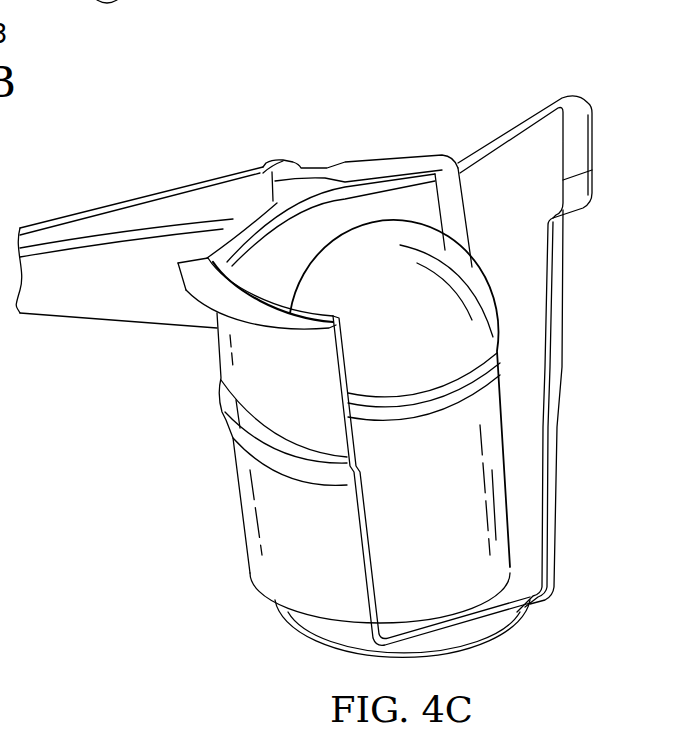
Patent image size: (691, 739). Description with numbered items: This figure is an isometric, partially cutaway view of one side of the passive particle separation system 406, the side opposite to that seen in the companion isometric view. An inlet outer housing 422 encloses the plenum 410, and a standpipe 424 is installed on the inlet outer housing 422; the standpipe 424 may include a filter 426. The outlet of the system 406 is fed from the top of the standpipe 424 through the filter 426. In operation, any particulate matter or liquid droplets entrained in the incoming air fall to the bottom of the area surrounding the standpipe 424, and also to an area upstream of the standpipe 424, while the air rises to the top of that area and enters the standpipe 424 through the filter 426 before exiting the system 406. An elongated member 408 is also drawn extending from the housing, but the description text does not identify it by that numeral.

The passive particle separation system 406 is at (447, 63).
The handle 408 is at (117, 204).
The plenum 410 is at (518, 150).
The inlet outer housing 422 is at (203, 289).
The standpipe 424 is at (470, 487).
The filter 426 is at (407, 237).